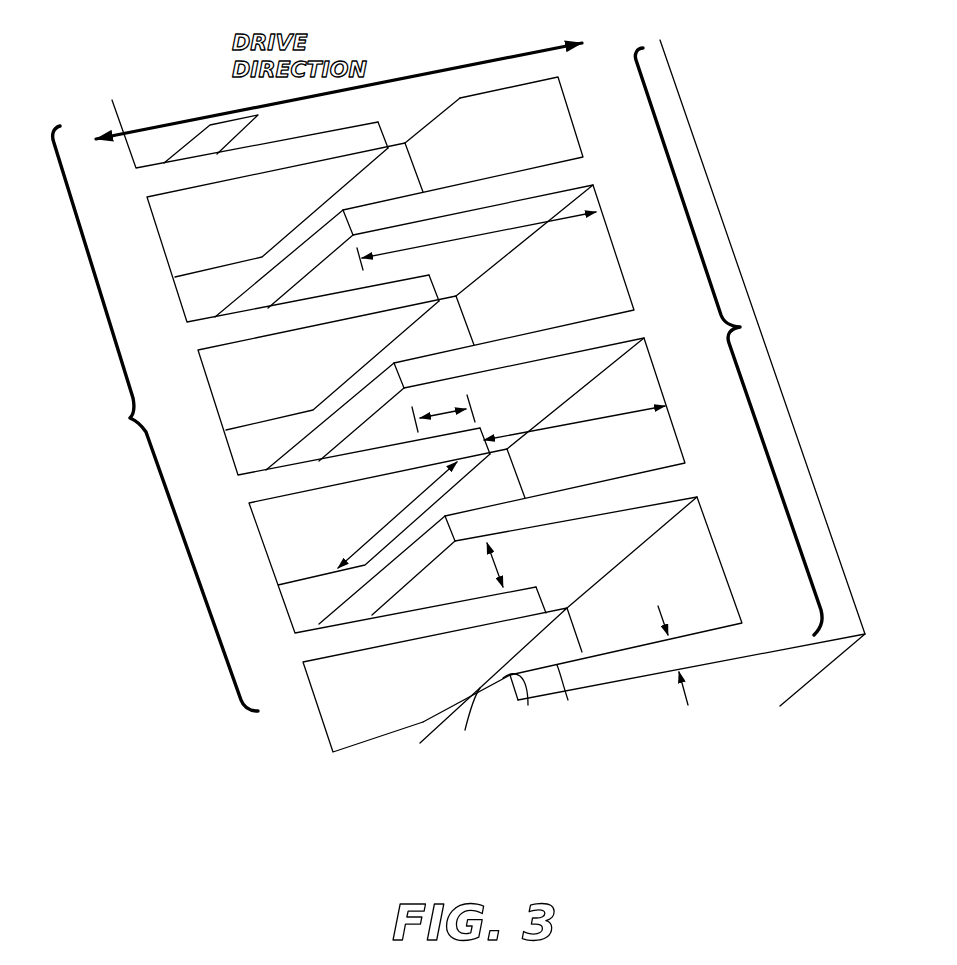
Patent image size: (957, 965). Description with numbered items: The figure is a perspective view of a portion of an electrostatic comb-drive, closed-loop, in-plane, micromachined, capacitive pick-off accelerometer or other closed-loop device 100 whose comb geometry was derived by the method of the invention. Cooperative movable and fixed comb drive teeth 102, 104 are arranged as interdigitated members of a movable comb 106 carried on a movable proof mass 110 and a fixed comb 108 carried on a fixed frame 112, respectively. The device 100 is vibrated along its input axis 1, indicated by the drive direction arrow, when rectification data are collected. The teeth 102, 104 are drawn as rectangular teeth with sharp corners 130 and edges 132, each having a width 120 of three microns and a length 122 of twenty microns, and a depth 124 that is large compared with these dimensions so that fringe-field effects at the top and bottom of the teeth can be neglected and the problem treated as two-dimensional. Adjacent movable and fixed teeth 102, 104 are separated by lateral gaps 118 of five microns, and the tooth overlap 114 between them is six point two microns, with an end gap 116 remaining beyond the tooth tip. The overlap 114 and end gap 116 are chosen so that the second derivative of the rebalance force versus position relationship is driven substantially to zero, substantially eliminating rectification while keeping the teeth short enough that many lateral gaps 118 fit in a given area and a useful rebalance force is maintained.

The input axis 1 is at (464, 68).
The accelerometer or other device 100 is at (826, 198).
The movable comb drive teeth 102 is at (196, 177).
The fixed comb drive teeth 104 is at (537, 183).
The movable comb 106 is at (130, 418).
The fixed comb 108 is at (741, 327).
The movable proof mass 110 is at (270, 622).
The fixed frame 112 is at (750, 466).
The tooth overlap 114 is at (440, 410).
The end gap 116 is at (577, 425).
The lateral gaps 118 is at (500, 572).
The tooth width 120 is at (686, 658).
The tooth length 122 is at (484, 236).
The tooth depth 124 is at (400, 512).
The sharp corners 130 is at (528, 705).
The edges 132 is at (465, 730).